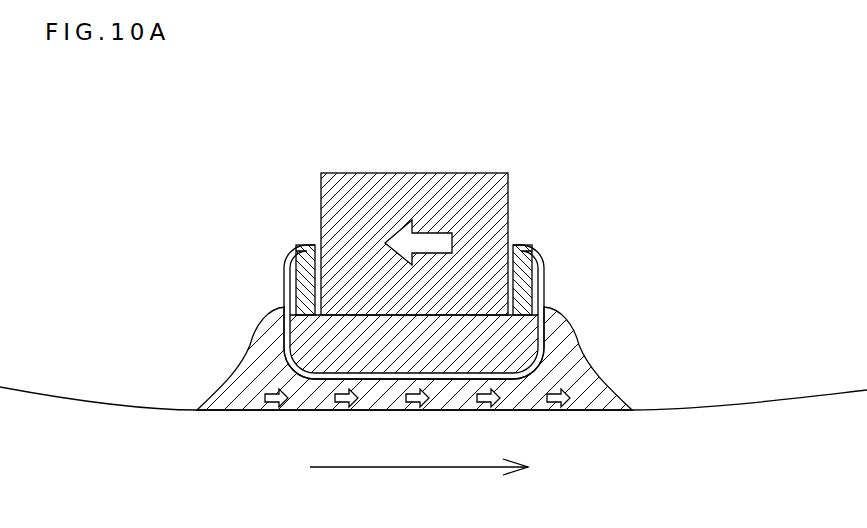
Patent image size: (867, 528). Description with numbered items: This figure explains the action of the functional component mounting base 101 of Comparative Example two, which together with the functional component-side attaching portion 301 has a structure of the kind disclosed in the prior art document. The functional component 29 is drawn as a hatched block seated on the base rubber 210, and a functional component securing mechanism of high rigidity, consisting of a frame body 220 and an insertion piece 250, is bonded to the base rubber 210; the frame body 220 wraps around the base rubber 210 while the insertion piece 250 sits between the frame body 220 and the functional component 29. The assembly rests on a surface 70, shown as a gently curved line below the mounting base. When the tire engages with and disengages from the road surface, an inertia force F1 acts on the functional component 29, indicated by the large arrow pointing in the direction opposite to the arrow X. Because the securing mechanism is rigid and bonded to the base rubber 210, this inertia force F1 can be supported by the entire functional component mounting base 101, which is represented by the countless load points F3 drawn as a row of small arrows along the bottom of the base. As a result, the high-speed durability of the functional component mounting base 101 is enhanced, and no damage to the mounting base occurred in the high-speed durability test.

The functional component 29 is at (510, 188).
The insertion piece 250 is at (515, 252).
The frame body 220 is at (538, 258).
The functional component mounting base 101 is at (563, 320).
The base rubber 210 is at (570, 357).
The substrate / land 70 is at (652, 410).
The functional component-side attaching portion 301 is at (440, 357).
The inertia force F1 is at (425, 233).
The load points F3 is at (263, 406).
The X direction X is at (385, 468).